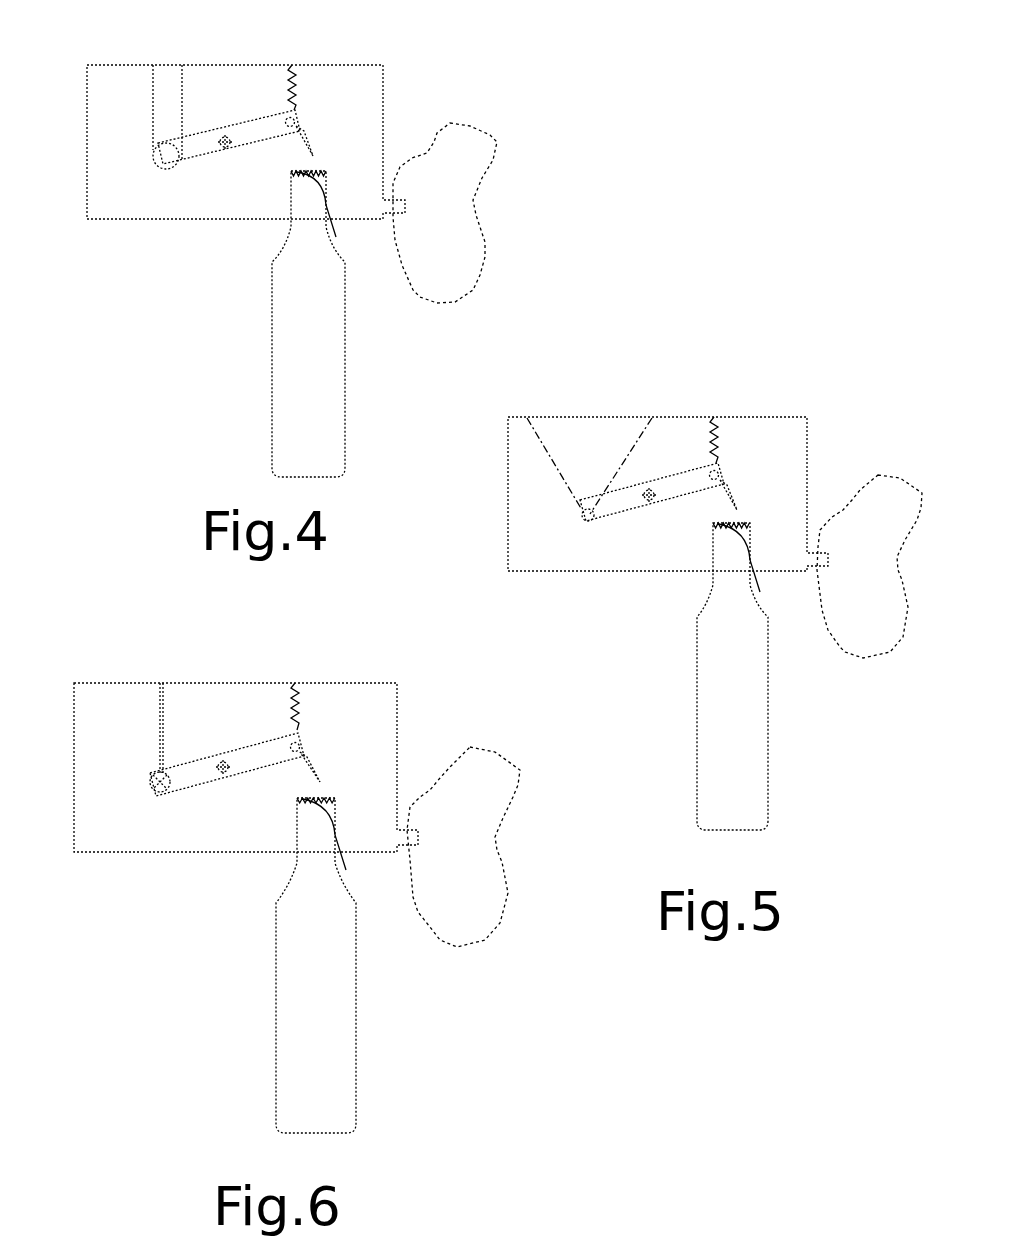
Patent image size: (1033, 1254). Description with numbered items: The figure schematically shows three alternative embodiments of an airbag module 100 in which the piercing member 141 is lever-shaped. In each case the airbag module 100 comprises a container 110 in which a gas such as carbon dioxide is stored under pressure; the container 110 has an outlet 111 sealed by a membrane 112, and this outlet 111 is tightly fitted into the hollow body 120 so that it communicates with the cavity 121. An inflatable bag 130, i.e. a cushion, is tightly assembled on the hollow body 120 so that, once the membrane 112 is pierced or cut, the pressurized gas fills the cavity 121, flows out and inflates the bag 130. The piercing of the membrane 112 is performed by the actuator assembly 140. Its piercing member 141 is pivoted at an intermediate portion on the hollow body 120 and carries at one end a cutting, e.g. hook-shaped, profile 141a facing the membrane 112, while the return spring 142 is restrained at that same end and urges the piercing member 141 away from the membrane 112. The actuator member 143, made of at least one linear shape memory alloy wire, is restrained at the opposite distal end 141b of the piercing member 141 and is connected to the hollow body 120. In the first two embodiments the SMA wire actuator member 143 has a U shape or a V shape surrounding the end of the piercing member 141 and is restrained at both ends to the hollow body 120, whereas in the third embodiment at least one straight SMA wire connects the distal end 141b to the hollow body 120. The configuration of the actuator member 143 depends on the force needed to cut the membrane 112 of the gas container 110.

In FIG. 4, the airbag module 100 is at (478, 92).
In FIG. 4, the container 110 is at (304, 324).
In FIG. 5, the container 110 is at (724, 676).
In FIG. 6, the container 110 is at (307, 965).
In FIG. 4, the outlet 111 is at (291, 226).
In FIG. 5, the outlet 111 is at (713, 582).
In FIG. 6, the outlet 111 is at (297, 862).
In FIG. 4, the membrane 112 is at (334, 230).
In FIG. 5, the membrane 112 is at (758, 586).
In FIG. 6, the membrane 112 is at (342, 858).
In FIG. 4, the hollow body 120 is at (87, 182).
In FIG. 5, the hollow body 120 is at (510, 532).
In FIG. 6, the hollow body 120 is at (398, 718).
In FIG. 4, the cavity 121 is at (203, 200).
In FIG. 5, the cavity 121 is at (624, 552).
In FIG. 6, the cavity 121 is at (203, 834).
In FIG. 4, the inflatable bag 130 is at (483, 222).
In FIG. 5, the inflatable bag 130 is at (905, 574).
In FIG. 6, the inflatable bag 130 is at (505, 852).
In FIG. 4, the actuator assembly 140 is at (237, 98).
In FIG. 5, the actuator assembly 140 is at (660, 447).
In FIG. 6, the actuator assembly 140 is at (236, 716).
In FIG. 4, the piercing member 141 is at (258, 122).
In FIG. 5, the piercing member 141 is at (688, 474).
In FIG. 6, the piercing member 141 is at (265, 747).
In FIG. 4, the cutting end 141a is at (310, 142).
In FIG. 5, the cutting end 141a is at (735, 492).
In FIG. 6, the cutting end 141a is at (315, 770).
In FIG. 4, the distal end 141b is at (158, 166).
In FIG. 5, the distal end 141b is at (582, 520).
In FIG. 6, the distal end 141b is at (152, 793).
In FIG. 4, the spring 142 is at (293, 98).
In FIG. 5, the spring 142 is at (718, 450).
In FIG. 6, the spring 142 is at (298, 725).
In FIG. 4, the actuator member 143 is at (153, 120).
In FIG. 5, the actuator member 143 is at (620, 472).
In FIG. 6, the actuator member 143 is at (162, 757).